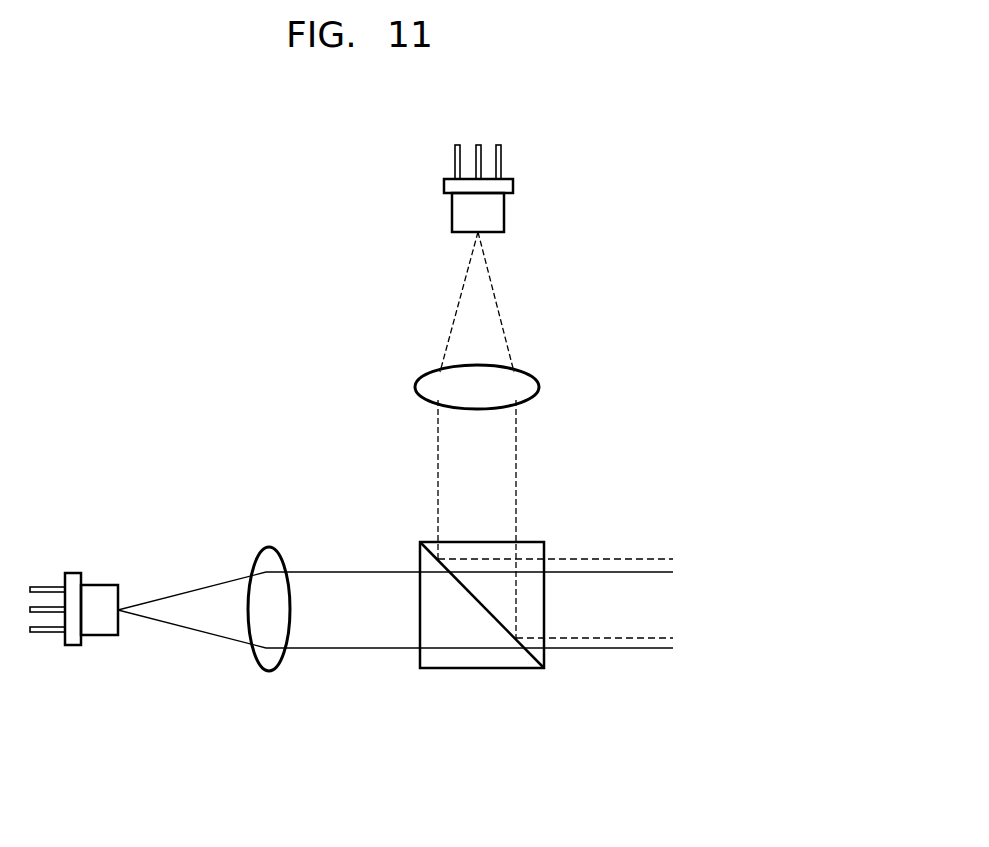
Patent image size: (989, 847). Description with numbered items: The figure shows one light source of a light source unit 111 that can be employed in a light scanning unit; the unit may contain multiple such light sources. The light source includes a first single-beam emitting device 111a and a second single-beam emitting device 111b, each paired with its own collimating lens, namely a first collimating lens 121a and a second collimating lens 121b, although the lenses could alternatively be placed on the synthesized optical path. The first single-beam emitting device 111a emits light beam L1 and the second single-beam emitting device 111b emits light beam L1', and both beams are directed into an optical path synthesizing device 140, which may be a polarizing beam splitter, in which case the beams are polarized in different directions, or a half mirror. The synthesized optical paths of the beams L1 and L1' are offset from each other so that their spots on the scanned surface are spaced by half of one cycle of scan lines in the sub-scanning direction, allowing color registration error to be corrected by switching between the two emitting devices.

The light source unit 111 is at (668, 143).
The first single-beam emitting device 111a is at (97, 645).
The second single-beam emitting device 111b is at (504, 213).
The first collimating lens 121a is at (268, 672).
The second collimating lens 121b is at (538, 387).
The optical path synthesizing device 140 is at (481, 670).
The first light beam L1 is at (664, 686).
The first light beam L1' is at (667, 523).